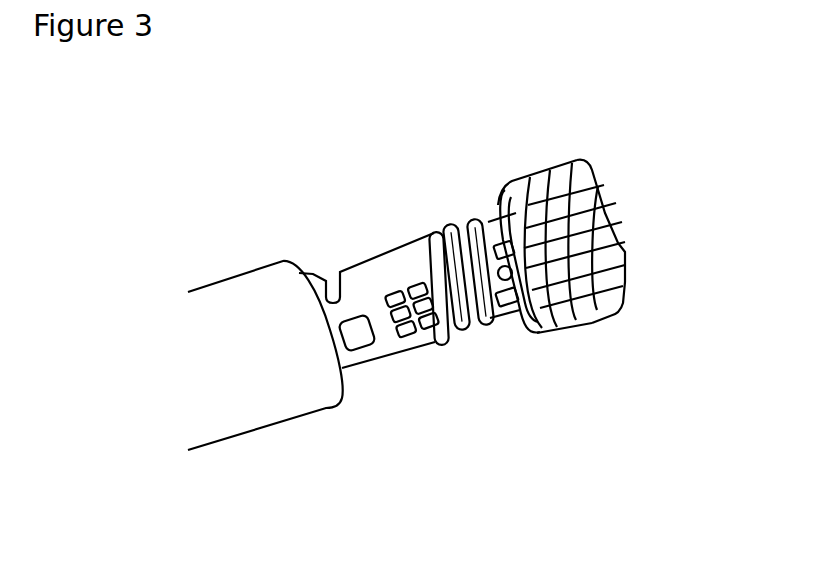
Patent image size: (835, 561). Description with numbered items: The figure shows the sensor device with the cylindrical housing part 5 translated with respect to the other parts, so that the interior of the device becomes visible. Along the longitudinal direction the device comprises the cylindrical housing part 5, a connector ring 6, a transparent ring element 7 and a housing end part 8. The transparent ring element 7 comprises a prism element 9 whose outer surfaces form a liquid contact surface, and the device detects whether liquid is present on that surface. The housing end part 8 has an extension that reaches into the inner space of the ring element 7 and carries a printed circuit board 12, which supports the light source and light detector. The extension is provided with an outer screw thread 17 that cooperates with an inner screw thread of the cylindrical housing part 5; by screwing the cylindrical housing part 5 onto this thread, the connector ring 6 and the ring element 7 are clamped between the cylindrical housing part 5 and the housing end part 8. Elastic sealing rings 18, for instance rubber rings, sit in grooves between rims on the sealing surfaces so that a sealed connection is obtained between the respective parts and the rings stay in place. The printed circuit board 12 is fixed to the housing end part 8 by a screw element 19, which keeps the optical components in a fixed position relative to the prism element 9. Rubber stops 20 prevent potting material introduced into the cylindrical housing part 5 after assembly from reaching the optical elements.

The cylindrical housing part 5 is at (235, 315).
The printed circuit board 12 is at (363, 280).
The outer screw thread 17 is at (493, 211).
The rubber stops 20 is at (469, 268).
The screw element 19 is at (510, 295).
The connector ring 6 is at (517, 195).
The transparent ring element 7 is at (550, 183).
The housing end part 8 is at (578, 182).
The prism element 9 is at (625, 250).
The elastic sealing rings 18 is at (528, 330).